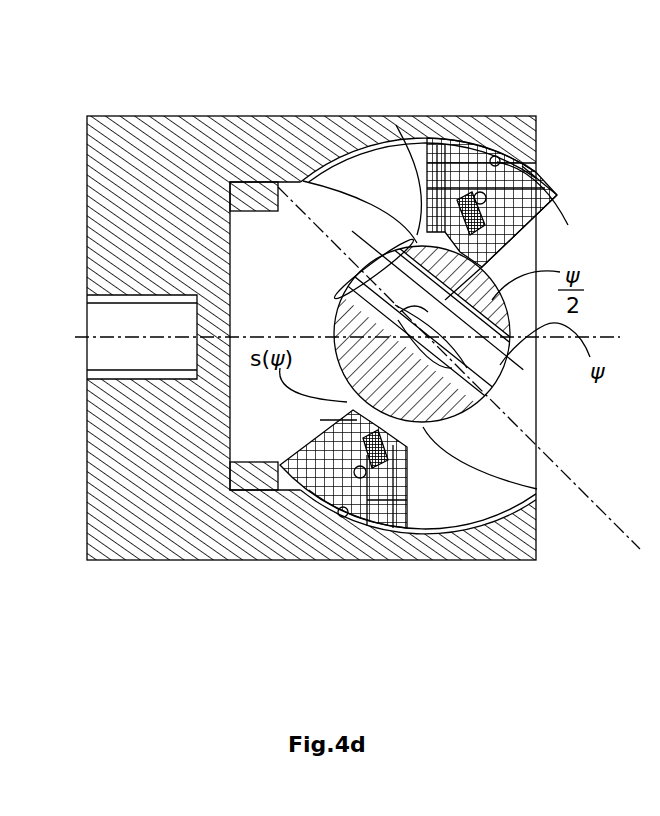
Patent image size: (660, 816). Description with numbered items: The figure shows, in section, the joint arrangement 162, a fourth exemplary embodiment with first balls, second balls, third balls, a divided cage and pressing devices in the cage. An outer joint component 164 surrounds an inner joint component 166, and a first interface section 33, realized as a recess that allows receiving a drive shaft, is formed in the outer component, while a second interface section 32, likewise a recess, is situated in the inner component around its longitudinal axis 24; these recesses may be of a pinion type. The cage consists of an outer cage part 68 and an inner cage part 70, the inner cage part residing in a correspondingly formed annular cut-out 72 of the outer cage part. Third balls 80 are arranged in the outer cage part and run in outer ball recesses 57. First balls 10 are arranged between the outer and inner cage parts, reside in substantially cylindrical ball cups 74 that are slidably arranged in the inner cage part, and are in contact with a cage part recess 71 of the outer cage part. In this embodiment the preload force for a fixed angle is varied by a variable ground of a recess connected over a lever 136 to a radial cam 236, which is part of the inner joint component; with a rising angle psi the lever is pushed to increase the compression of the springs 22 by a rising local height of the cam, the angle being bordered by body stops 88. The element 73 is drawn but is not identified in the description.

The joint arrangement 162 is at (90, 93).
The housing body 164 is at (158, 135).
The upper bearing insert 166 is at (292, 140).
The radial cam 236 is at (345, 138).
The outer ball recesses 57 is at (396, 125).
The lever 136 is at (443, 175).
The ball cups 74 is at (478, 192).
The third balls 80 is at (500, 158).
The lever arm 73 is at (537, 150).
The outer cage part 68 is at (495, 203).
The inner cage part 70 is at (522, 222).
The annular cut-out 72 is at (500, 282).
The longitudinal axis 24 is at (622, 527).
The second interface section 32 is at (471, 393).
The springs 22 is at (496, 540).
The first balls 10 is at (362, 515).
The cage part recess 71 is at (367, 487).
The body stops 88 is at (230, 493).
The first interface section 33 is at (98, 362).